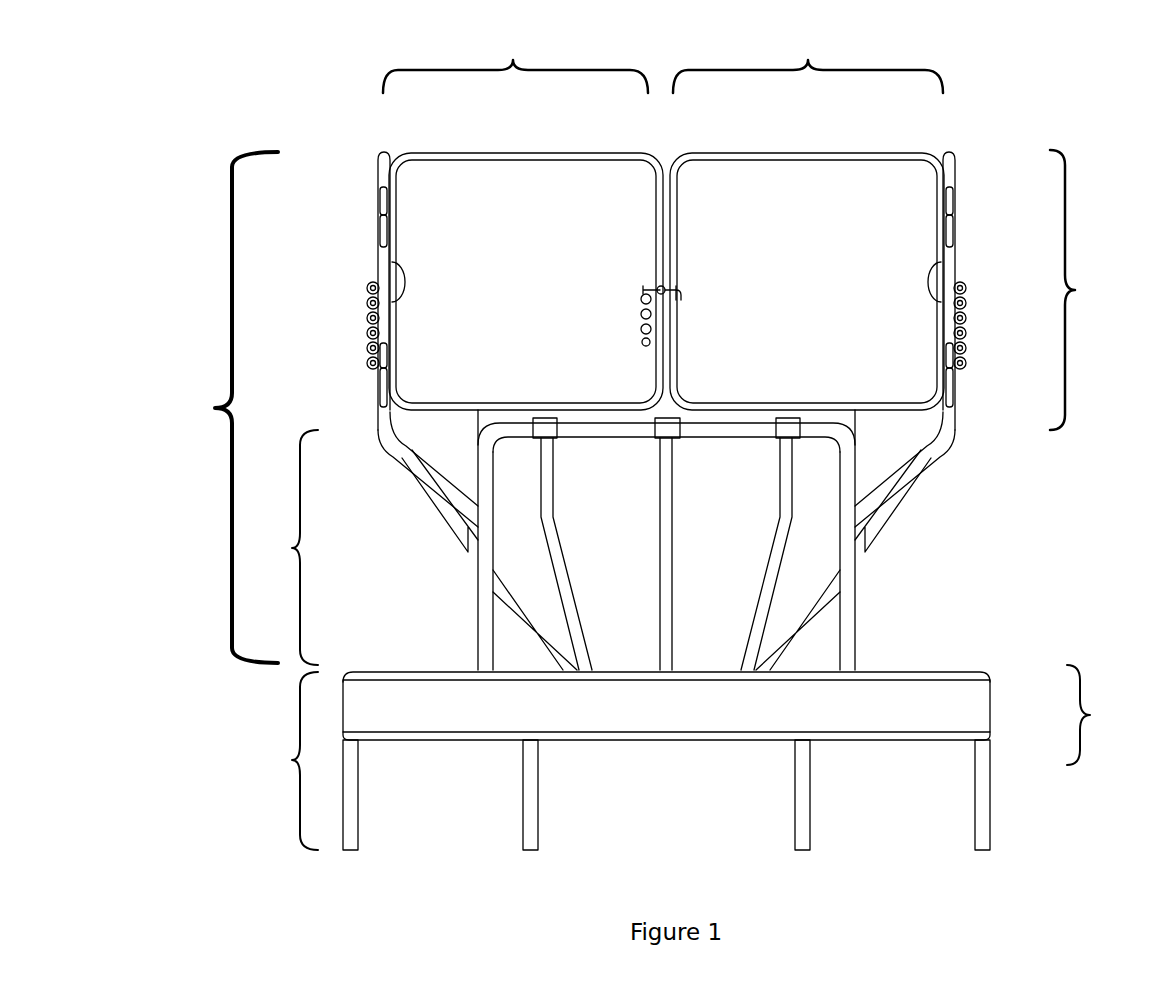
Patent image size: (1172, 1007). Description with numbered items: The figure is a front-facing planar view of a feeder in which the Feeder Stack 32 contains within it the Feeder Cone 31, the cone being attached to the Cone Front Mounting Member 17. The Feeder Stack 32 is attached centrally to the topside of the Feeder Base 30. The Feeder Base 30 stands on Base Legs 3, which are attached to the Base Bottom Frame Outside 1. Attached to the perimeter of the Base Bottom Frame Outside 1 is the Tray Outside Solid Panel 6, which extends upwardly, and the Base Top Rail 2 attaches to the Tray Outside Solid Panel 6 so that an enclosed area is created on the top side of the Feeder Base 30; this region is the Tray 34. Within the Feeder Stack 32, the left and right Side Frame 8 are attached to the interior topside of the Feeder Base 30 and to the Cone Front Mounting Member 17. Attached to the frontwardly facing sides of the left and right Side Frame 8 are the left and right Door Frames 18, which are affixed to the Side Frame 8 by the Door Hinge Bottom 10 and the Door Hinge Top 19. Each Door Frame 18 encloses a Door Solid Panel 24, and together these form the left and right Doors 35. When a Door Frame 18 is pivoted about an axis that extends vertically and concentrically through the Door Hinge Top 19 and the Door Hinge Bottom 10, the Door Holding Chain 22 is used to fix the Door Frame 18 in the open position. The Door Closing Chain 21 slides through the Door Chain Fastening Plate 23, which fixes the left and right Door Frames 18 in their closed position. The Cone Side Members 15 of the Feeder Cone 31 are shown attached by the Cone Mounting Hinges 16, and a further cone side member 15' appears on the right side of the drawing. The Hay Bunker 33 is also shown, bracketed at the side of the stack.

The base bottom frame outside 1 is at (975, 732).
The base top rail 2 is at (985, 675).
The base legs 3 is at (350, 823).
The tray outside solid panel 6 is at (940, 708).
The side frame 8 is at (405, 452).
The door hinge bottom 10 is at (386, 228).
The cone side members 15 is at (699, 541).
The brace tube 15' is at (917, 509).
The cone mounting hinges 16 is at (790, 425).
The cone front mounting member 17 is at (845, 498).
The door frames 18 is at (532, 157).
The door hinge top 19 is at (384, 197).
The door closing chain 21 is at (643, 290).
The door holding chain 22 is at (372, 284).
The door chain fastening plate 23 is at (660, 274).
The door solid panel 24 is at (572, 185).
The feeder base 30 is at (291, 761).
The feeder cone 31 is at (288, 547).
The feeder stack 32 is at (222, 407).
The hay bunker 33 is at (1091, 290).
The tray 34 is at (1098, 715).
The doors 35 is at (663, 60).